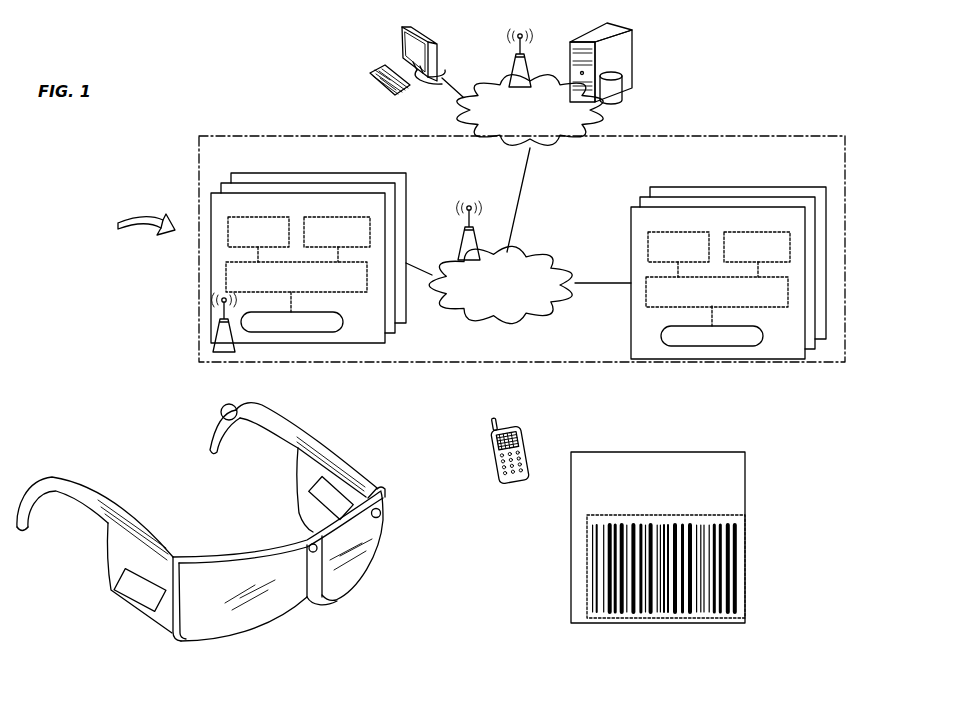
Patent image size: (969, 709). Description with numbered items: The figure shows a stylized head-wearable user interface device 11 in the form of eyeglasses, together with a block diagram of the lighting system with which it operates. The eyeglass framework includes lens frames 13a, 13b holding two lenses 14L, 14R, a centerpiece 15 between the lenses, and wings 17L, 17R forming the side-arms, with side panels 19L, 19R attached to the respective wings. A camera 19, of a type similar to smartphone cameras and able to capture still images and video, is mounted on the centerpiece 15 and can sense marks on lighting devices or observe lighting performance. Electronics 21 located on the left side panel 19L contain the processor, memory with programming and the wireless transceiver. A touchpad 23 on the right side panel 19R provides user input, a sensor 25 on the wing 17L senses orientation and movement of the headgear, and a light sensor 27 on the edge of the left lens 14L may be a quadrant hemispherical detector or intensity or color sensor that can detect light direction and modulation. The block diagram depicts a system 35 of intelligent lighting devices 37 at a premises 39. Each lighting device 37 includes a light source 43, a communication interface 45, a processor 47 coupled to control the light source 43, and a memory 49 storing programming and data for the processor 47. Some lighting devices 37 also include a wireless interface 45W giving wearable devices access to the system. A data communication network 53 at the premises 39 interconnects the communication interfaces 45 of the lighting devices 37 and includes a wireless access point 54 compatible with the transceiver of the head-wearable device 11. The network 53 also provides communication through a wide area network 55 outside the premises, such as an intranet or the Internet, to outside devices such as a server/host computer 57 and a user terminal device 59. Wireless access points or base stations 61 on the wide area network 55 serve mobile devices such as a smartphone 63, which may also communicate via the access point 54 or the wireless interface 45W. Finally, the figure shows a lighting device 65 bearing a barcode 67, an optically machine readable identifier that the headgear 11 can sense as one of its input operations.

The head-wearable user interface device 11 is at (115, 401).
The lens frame 13a is at (170, 625).
The lens frame 13b is at (382, 489).
The right lens 14R is at (222, 580).
The left lens 14L is at (358, 577).
The centerpiece 15 is at (315, 590).
The right wing 17R is at (62, 477).
The left wing 17L is at (213, 427).
The camera 19 is at (310, 544).
The right side panel 19R is at (107, 567).
The left side panel 19L is at (297, 480).
The electronics 21 is at (337, 490).
The touchpad 23 is at (123, 600).
The sensor 25 is at (240, 406).
The light sensor 27 is at (381, 517).
The system 35 is at (137, 227).
The intelligent lighting device 37 is at (208, 175).
The premises 39 is at (320, 135).
The light source 43 is at (328, 333).
The communication interface 45 is at (230, 230).
The wireless interface 45W is at (218, 323).
The processor 47 is at (227, 277).
The memory 49 is at (370, 231).
The data communication network 53 is at (543, 318).
The wireless access point 54 is at (458, 245).
The wide area network 55 is at (493, 82).
The server/host computer 57 is at (632, 60).
The user terminal device 59 is at (376, 51).
The wireless access point or base station 61 is at (512, 62).
The smartphone 63 is at (490, 438).
The lighting device 65 is at (745, 497).
The barcode 67 is at (587, 563).